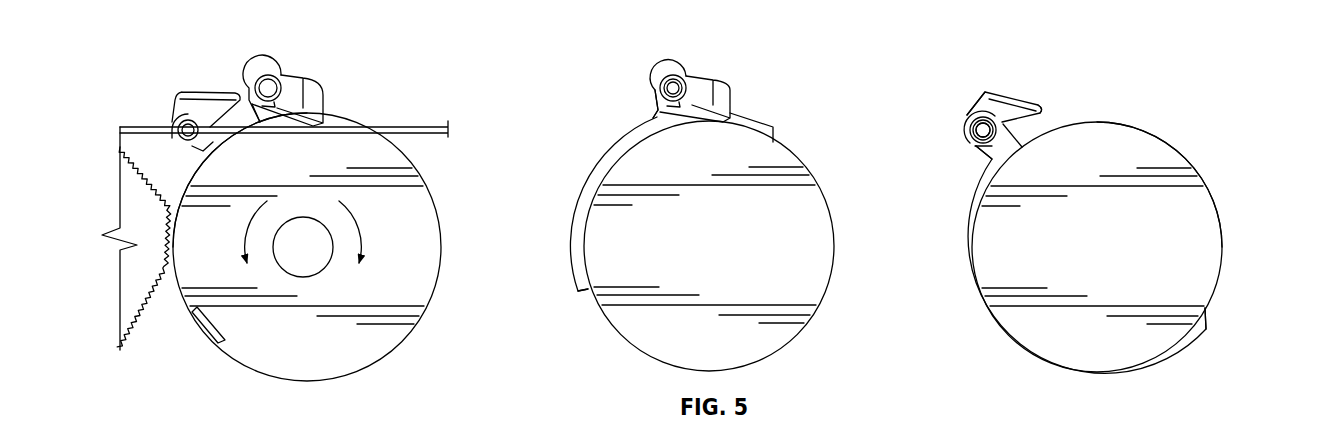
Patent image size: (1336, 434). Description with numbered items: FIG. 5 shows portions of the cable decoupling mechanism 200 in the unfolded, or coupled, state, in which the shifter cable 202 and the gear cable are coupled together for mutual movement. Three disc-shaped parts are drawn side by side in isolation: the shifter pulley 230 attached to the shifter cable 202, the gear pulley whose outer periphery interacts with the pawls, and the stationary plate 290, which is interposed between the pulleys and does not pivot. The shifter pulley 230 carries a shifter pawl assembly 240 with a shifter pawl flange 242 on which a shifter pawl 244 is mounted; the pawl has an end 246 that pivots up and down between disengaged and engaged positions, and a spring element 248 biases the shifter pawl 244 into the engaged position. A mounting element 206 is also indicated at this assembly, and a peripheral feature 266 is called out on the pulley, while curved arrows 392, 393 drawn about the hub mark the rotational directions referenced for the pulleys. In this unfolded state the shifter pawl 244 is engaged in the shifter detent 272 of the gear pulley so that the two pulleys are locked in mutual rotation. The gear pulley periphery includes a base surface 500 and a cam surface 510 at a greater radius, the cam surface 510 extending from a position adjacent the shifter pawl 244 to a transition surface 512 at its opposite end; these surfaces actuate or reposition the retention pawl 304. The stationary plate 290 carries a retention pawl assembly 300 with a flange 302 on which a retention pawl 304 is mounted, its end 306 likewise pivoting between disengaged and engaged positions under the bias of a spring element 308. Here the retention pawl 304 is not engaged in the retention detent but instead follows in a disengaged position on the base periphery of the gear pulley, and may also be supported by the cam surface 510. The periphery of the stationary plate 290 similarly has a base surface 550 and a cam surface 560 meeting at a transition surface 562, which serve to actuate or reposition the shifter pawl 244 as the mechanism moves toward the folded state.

The cable decoupling mechanism 200 is at (176, 73).
The shifter cable 202 is at (421, 118).
The mounting bracket 206 is at (267, 60).
The shifter pulley 230 is at (219, 340).
The shifter pawl assembly 240 is at (648, 66).
The shifter pawl flange 242 is at (656, 108).
The shifter pawl 244 is at (310, 90).
The end 246 is at (731, 94).
The spring element 248 is at (679, 70).
The blade 266 is at (430, 180).
The shifter detent 272 is at (297, 122).
The stationary plate 290 is at (1151, 147).
The retention pawl assembly 300 is at (961, 100).
The flange 302 is at (985, 165).
The retention pawl 304 is at (223, 100).
The end 306 is at (1039, 100).
The spring element 308 is at (969, 132).
The rotation direction arrow 392 is at (248, 240).
The rotation direction arrow 393 is at (359, 237).
The base surface 500 is at (803, 162).
The cam surface 510 is at (441, 273).
The transition surface 512 is at (584, 298).
The base surface 550 is at (1214, 200).
The cam surface 560 is at (1168, 365).
The transition surface 562 is at (1210, 313).